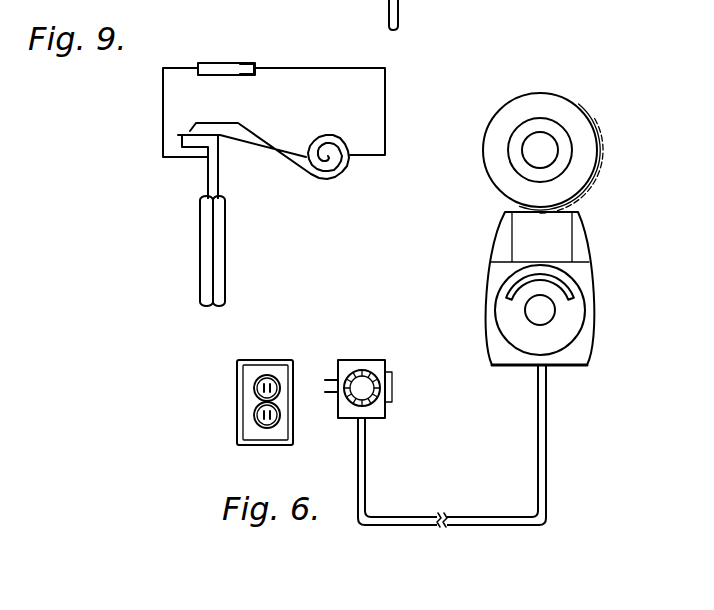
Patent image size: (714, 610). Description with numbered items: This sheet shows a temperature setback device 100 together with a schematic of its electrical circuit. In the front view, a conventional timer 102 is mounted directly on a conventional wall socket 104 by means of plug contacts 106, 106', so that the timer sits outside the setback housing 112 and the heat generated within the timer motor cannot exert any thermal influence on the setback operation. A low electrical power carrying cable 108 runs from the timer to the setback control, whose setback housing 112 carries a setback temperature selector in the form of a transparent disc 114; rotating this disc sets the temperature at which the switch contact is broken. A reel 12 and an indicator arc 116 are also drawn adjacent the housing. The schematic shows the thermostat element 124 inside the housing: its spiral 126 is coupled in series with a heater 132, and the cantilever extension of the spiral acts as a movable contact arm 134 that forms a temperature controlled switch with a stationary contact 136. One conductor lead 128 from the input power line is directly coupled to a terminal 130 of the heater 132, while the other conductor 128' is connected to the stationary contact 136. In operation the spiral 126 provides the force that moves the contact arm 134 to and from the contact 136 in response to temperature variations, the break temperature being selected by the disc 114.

In FIG. 6, the reel 12 is at (573, 115).
In FIG. 6, the temperature setback device 100 is at (543, 237).
In FIG. 6, the timer 102 is at (386, 362).
In FIG. 6, the wall socket 104 is at (275, 362).
In FIG. 6, the plug contact 106 is at (365, 347).
In FIG. 6, the plug contact 106' is at (331, 428).
In FIG. 9, the low electrical power carrying cable 108 is at (205, 242).
In FIG. 6, the low electrical power carrying cable 108 is at (542, 442).
In FIG. 6, the setback housing 112 is at (573, 355).
In FIG. 6, the transparent disc 114 is at (567, 323).
In FIG. 6, the indicator arc 116 is at (536, 266).
In FIG. 9, the thermostat element 124 is at (306, 162).
In FIG. 9, the spiral 126 is at (335, 180).
In FIG. 9, the conductor lead 128 is at (238, 112).
In FIG. 9, the conductor 128' is at (254, 204).
In FIG. 9, the terminal 130 is at (185, 63).
In FIG. 9, the heater 132 is at (242, 63).
In FIG. 9, the movable contact arm 134 is at (222, 123).
In FIG. 9, the stationary contact 136 is at (222, 137).